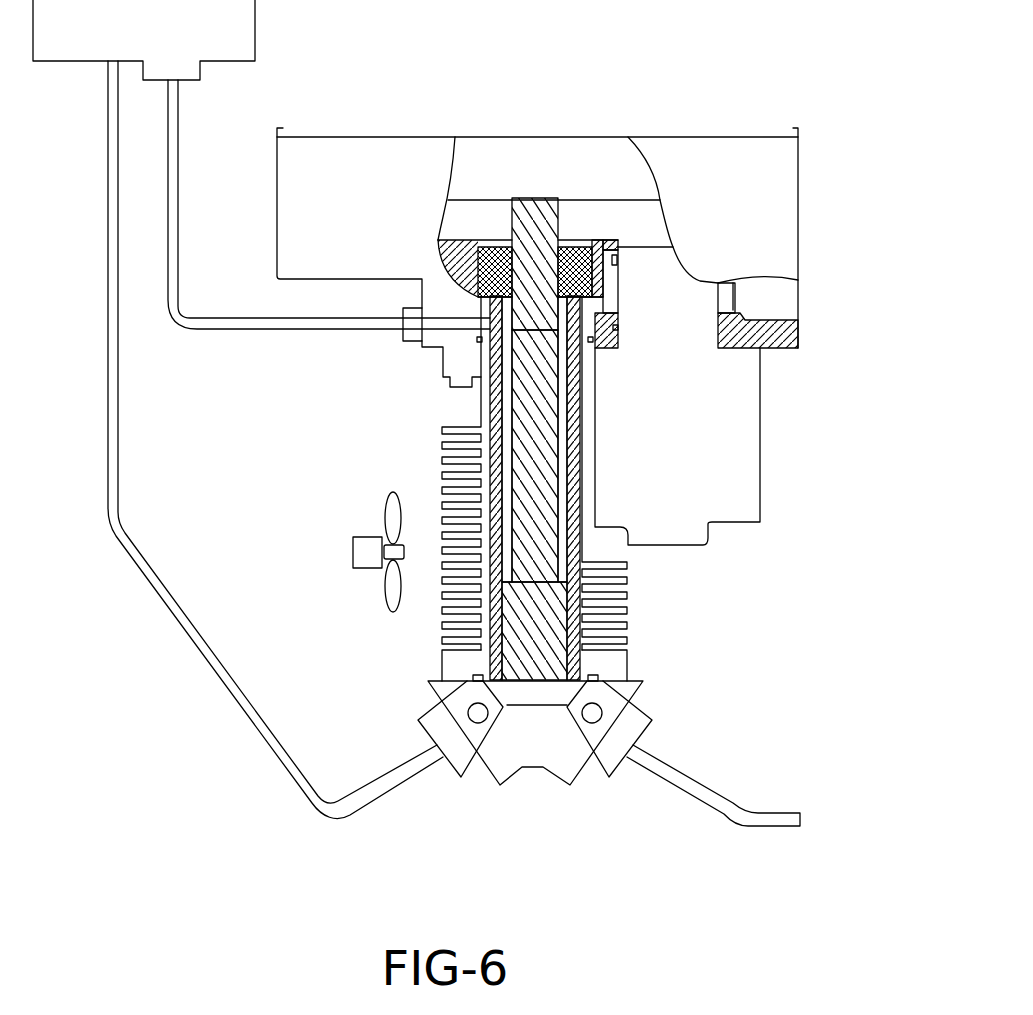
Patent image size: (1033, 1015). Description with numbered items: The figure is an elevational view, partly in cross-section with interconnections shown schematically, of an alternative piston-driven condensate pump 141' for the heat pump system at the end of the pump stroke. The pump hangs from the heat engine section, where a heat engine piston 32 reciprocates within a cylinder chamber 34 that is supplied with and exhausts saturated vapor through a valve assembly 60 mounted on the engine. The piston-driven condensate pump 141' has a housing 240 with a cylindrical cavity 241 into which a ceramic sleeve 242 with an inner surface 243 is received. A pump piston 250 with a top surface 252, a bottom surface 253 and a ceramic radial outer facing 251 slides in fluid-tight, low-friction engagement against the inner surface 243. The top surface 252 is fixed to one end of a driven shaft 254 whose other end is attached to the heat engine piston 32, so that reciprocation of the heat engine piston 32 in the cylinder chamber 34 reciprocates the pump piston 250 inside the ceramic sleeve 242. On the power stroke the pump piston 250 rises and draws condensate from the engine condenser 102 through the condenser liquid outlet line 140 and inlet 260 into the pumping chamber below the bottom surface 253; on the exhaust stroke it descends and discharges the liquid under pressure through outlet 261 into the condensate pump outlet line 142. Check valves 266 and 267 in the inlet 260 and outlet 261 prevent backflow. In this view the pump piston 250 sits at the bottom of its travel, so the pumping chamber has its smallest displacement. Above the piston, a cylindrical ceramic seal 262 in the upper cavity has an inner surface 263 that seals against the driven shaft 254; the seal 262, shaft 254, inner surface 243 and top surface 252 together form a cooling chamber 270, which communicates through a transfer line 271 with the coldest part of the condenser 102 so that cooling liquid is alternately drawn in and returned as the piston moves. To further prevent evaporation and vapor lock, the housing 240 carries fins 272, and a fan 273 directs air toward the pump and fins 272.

The engine condenser 102 is at (118, 37).
The heat engine piston 32 is at (612, 186).
The cylinder chamber 34 is at (608, 234).
The valve assembly 60 is at (689, 442).
The condenser liquid outlet line 140 is at (148, 568).
The condensate pump outlet line 142 is at (752, 808).
The piston-driven condensate pump 141' is at (663, 658).
The housing 240 is at (617, 665).
The cylindrical cavity 241 is at (585, 629).
The ceramic sleeve 242 is at (573, 570).
The inner surface 243 is at (563, 517).
The pump piston 250 is at (538, 662).
The radial outer facing 251 is at (500, 650).
The top surface 252 is at (512, 580).
The bottom surface 253 is at (522, 681).
The driven shaft 254 is at (540, 460).
The inlet 260 is at (492, 705).
The outlet 261 is at (578, 705).
The cylindrical ceramic seal 262 is at (488, 262).
The inner surface 263 is at (514, 262).
The check valve 266 is at (458, 730).
The check valve 267 is at (612, 730).
The cooling chamber 270 is at (507, 396).
The transfer line 271 is at (260, 331).
The fins 272 is at (443, 500).
The fan 273 is at (372, 558).